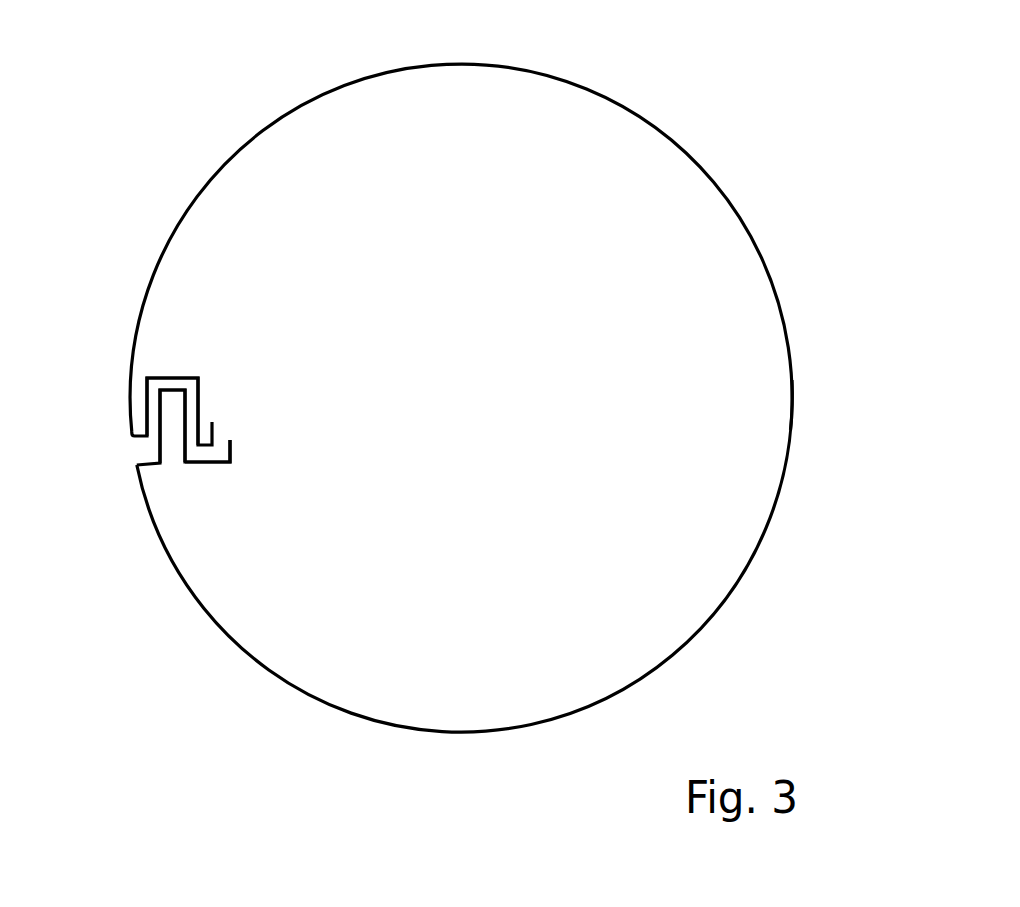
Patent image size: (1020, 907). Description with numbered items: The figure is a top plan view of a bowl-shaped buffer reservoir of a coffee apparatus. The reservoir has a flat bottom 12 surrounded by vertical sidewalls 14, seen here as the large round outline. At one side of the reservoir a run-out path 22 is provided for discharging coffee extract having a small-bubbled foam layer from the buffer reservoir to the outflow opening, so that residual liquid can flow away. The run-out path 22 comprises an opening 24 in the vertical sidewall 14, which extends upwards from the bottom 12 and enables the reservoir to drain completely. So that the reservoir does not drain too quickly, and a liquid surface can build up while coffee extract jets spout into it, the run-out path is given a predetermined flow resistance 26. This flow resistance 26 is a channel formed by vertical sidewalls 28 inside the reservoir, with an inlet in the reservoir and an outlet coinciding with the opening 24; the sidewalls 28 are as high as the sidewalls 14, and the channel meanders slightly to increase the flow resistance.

The flat bottom 12 is at (623, 180).
The vertical sidewalls 14 is at (743, 227).
The run-out path 22 is at (198, 378).
The opening 24 is at (134, 448).
The flow resistance 26 is at (200, 465).
The vertical sidewalls of the flow resistance 28 is at (200, 410).